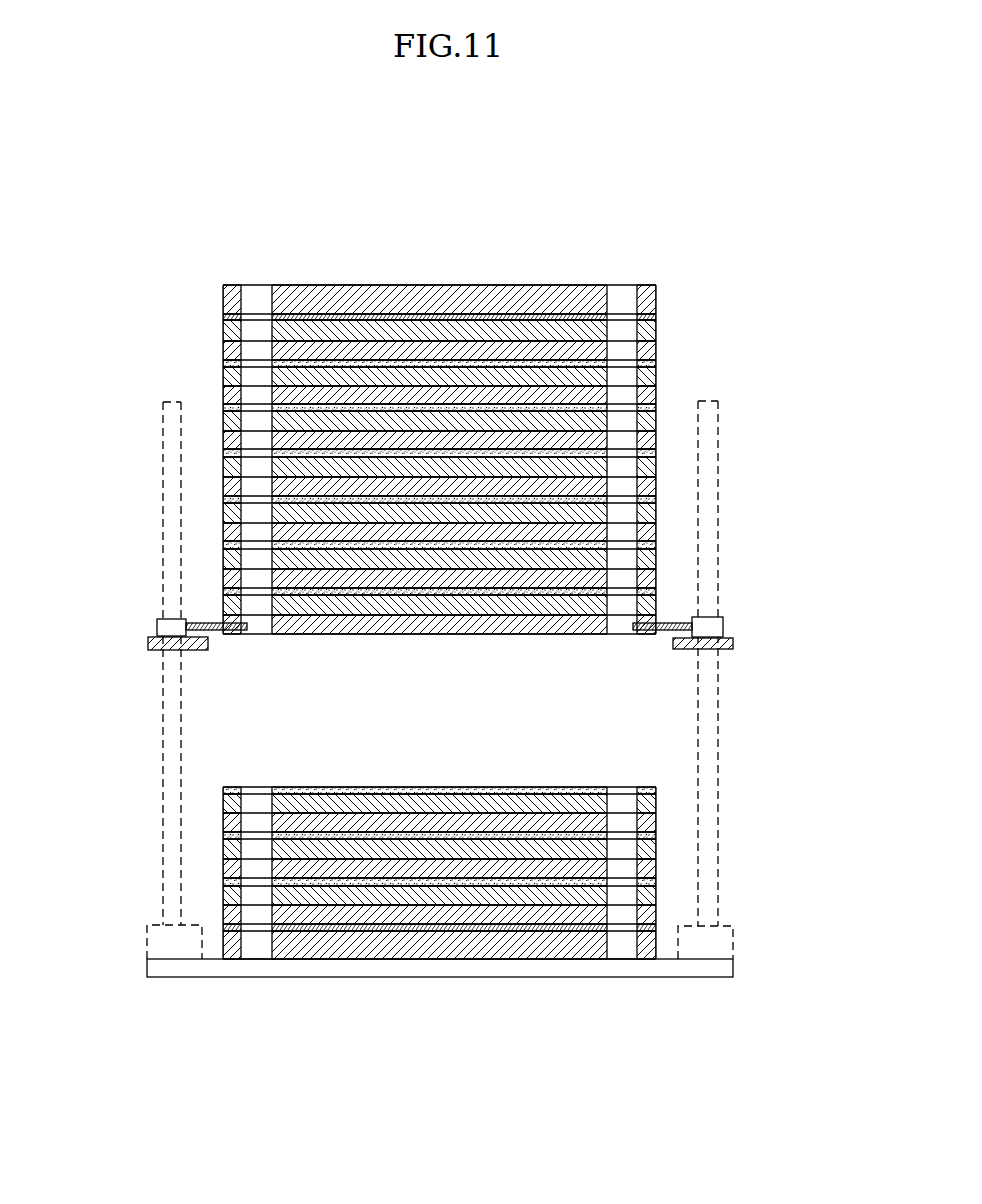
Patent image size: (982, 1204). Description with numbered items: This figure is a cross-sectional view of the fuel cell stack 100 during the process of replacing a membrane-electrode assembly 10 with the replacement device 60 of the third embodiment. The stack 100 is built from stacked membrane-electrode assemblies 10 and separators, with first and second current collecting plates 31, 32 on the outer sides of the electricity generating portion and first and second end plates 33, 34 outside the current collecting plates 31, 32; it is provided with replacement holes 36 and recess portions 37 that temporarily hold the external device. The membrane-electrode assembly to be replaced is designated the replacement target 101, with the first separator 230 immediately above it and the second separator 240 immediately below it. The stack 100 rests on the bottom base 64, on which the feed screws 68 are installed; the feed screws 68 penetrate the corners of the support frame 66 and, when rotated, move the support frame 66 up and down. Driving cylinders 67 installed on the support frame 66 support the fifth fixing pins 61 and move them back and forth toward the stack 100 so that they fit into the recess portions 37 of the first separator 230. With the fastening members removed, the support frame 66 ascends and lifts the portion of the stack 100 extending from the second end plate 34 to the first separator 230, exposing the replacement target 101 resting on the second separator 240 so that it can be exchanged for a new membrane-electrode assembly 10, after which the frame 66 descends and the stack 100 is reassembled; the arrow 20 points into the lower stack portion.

The fuel cell stack 100 is at (477, 151).
The membrane-electrode assembly 10 is at (553, 410).
The fuel cell stack 20 is at (337, 924).
The first current collecting plate 31 is at (450, 927).
The second current collecting plate 32 is at (372, 315).
The first end plate 33 is at (503, 943).
The second end plate 34 is at (433, 293).
The replacement hole 36 is at (262, 293).
The recess portion 37 is at (650, 400).
The replacement device 60 is at (738, 632).
The fifth fixing pin 61 is at (203, 622).
The bottom base 64 is at (397, 968).
The support frame 66 is at (150, 648).
The driving cylinder 67 is at (160, 630).
The feed screw 68 is at (170, 536).
The replacement target 101 is at (439, 883).
The first separator 230 is at (439, 465).
The second separator 240 is at (512, 800).